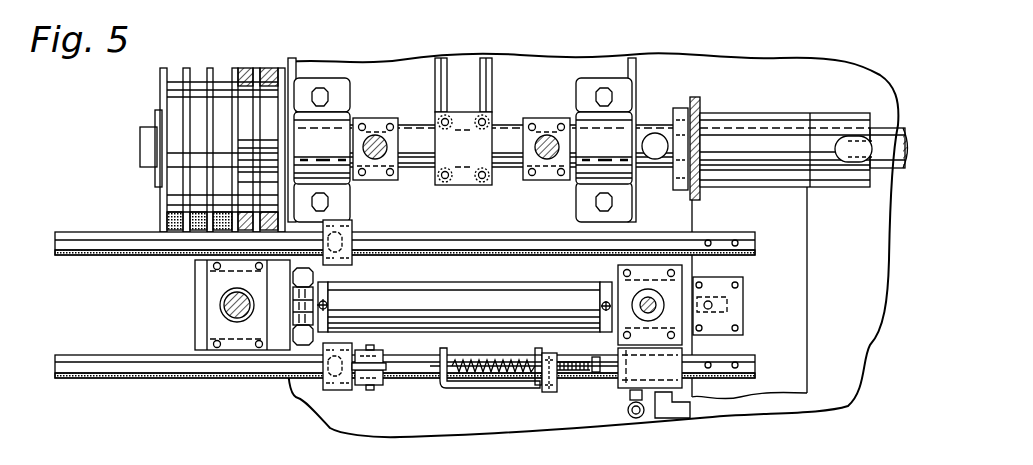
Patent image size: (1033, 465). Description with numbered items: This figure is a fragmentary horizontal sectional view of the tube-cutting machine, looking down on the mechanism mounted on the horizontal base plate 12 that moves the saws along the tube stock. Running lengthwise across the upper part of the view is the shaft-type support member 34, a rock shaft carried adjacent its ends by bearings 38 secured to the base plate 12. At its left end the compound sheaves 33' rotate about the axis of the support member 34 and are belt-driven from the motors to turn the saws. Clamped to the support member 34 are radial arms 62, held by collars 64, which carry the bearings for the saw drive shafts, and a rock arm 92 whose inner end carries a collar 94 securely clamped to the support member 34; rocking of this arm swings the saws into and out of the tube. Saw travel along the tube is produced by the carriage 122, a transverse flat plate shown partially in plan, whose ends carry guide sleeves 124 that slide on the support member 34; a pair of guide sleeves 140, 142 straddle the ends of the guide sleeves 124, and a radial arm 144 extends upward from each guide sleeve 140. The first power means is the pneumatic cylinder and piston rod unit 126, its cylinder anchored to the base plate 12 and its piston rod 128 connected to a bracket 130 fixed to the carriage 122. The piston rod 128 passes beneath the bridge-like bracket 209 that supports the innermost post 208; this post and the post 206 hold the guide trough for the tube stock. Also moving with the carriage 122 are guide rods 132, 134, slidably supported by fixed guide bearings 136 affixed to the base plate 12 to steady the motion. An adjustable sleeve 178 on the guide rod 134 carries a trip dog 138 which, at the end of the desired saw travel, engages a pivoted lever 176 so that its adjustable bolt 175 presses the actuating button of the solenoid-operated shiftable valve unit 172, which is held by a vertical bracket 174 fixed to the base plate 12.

The base plate 12 is at (272, 420).
The compound sheaves 33' is at (187, 150).
The support member 34 is at (420, 125).
The bearings 38 is at (334, 112).
The radial arms 62 is at (374, 135).
The collars 64 is at (380, 178).
The rock arm 92 is at (492, 80).
The collars 94 is at (465, 185).
The carriage 122 is at (807, 286).
The guide sleeves 124 is at (736, 113).
The pneumatic cylinder and piston rod unit 126 is at (443, 310).
The piston rod 128 is at (702, 322).
The bracket 130 is at (743, 305).
The guide rod 132 is at (520, 256).
The guide rod 134 is at (232, 380).
The guide bearings 136 is at (353, 258).
The trip dog 138 is at (388, 386).
The guide sleeve 140 is at (656, 112).
The guide sleeve 142 is at (838, 113).
The radial arm 144 is at (657, 150).
The solenoid-operated shiftable valve unit 172 is at (655, 382).
The vertical bracket 174 is at (643, 342).
The adjustable bolt 175 is at (572, 372).
The pivoted lever 176 is at (555, 385).
The sleeve 178 is at (365, 348).
The post 206 is at (222, 300).
The post 208 is at (657, 298).
The bracket 209 is at (618, 270).